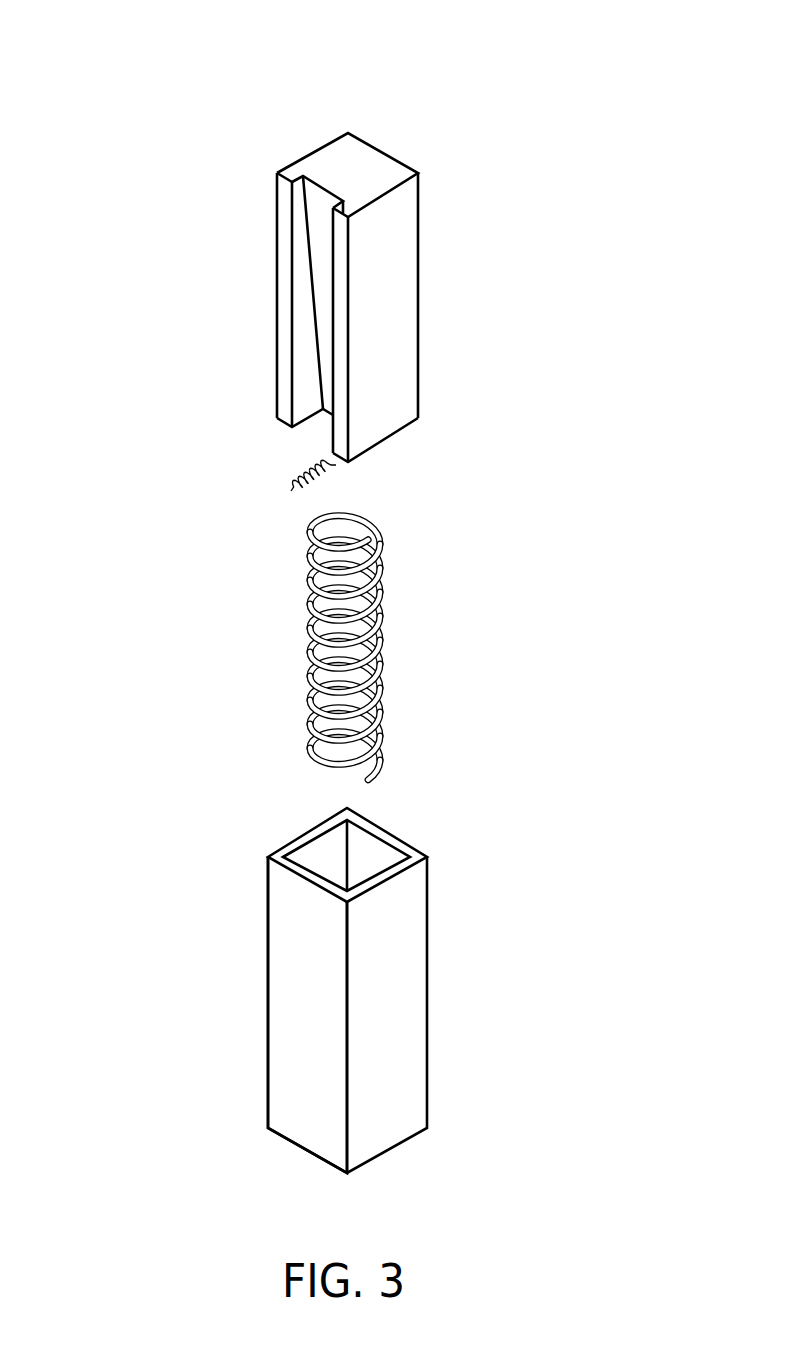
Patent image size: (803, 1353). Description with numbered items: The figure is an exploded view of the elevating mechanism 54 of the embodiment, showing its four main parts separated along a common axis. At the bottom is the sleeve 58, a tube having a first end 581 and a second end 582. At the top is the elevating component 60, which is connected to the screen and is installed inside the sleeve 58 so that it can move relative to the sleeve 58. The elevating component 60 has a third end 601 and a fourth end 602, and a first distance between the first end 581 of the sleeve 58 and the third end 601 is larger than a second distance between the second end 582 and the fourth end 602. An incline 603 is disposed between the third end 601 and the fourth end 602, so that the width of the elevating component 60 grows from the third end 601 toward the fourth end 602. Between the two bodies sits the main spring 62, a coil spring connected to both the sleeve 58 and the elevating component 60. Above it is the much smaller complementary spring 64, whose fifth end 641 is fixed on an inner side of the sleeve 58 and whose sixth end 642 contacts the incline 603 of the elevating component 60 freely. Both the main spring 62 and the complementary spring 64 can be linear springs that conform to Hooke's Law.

The elevating mechanism 54 is at (200, 55).
The elevating component 60 is at (448, 182).
The third end 601 is at (322, 413).
The fourth end 602 is at (317, 187).
The incline 603 is at (318, 262).
The complementary spring 64 is at (485, 461).
The fifth end 641 is at (300, 487).
The sixth end 642 is at (328, 466).
The main spring 62 is at (380, 692).
The sleeve 58 is at (453, 888).
The first end 581 is at (286, 1040).
The second end 582 is at (328, 853).